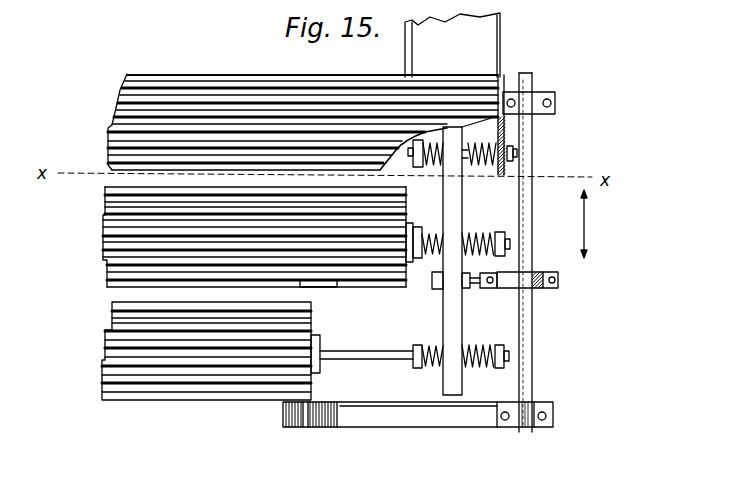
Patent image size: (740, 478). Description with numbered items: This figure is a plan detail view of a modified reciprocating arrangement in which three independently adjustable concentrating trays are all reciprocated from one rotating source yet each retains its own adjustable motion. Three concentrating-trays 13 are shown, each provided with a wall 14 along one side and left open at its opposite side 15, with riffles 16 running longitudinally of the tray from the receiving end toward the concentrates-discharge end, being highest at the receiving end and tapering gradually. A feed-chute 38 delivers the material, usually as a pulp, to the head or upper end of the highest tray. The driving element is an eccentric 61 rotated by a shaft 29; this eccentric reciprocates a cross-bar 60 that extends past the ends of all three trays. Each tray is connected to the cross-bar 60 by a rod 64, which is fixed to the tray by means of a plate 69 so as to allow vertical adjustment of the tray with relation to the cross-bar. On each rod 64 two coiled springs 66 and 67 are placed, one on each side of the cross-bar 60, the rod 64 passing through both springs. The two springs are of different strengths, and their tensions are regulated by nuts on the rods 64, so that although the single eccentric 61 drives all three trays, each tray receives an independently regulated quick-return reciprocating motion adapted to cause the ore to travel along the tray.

The concentrating-tray 13 is at (303, 180).
The wall 14 is at (345, 80).
The open side 15 is at (303, 288).
The riffles 16 is at (216, 86).
The shaft 29 is at (533, 337).
The feed-chute 38 is at (452, 45).
The cross-bar 60 is at (456, 319).
The eccentric 61 is at (498, 291).
The rods 64 is at (509, 357).
The coiled spring 66 is at (426, 344).
The coiled spring 67 is at (477, 230).
The plate 69 is at (323, 339).